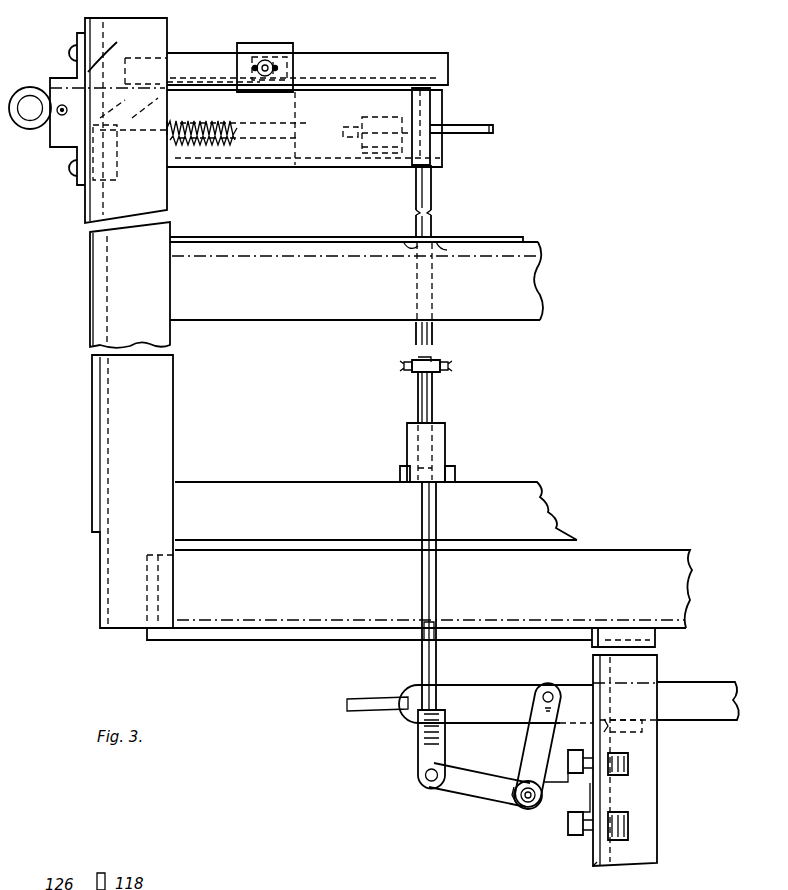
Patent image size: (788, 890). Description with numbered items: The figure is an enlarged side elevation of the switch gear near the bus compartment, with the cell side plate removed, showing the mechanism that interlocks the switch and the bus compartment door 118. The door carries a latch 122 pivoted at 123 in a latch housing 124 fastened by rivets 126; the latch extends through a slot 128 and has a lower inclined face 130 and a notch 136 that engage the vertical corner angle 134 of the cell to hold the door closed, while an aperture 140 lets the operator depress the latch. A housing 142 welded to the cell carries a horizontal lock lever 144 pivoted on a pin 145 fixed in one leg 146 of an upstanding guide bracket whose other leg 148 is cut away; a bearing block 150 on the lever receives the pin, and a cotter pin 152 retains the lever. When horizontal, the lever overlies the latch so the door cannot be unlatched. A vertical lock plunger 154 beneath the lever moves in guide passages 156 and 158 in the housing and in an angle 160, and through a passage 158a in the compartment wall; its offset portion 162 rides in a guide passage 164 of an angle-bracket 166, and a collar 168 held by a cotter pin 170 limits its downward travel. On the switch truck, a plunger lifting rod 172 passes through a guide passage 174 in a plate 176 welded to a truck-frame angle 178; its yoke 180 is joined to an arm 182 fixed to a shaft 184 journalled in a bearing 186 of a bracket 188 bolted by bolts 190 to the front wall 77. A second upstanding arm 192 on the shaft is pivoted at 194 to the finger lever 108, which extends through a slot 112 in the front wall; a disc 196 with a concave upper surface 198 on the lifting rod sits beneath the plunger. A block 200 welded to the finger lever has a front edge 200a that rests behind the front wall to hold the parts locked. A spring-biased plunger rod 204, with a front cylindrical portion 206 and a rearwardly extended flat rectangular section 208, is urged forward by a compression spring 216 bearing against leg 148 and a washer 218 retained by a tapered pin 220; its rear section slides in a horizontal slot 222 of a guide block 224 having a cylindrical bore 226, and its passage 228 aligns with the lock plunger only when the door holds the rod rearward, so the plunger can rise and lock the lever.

The front wall 77 is at (596, 862).
The finger lever 108 is at (470, 691).
The slot 112 is at (593, 673).
The door 118 is at (85, 213).
The latch 122 is at (113, 87).
The latch pivot 123 is at (63, 141).
The latch housing 124 is at (70, 168).
The rivets 126 is at (70, 53).
The slot 128 is at (104, 48).
The lower inclined face 130 is at (158, 96).
The vertical corner angle 134 is at (166, 199).
The notch 136 is at (100, 109).
The aperture 140 is at (28, 121).
The housing 142 is at (330, 152).
The lock lever 144 is at (345, 63).
The pin 145 is at (266, 60).
The leg of guide bracket 146 is at (294, 46).
The leg of guide bracket 148 is at (236, 122).
The bearing block 150 is at (255, 68).
The cotter pin 152 is at (276, 69).
The lock plunger 154 is at (433, 193).
The guide passage 156 is at (447, 160).
The guide passage 158 is at (434, 251).
The passage 158a is at (415, 241).
The angle 160 is at (535, 267).
The offset portion 162 is at (433, 412).
The guide passage 164 is at (415, 430).
The angle-bracket 166 is at (447, 453).
The collar 168 is at (437, 363).
The cotter pin 170 is at (404, 366).
The plunger lifting rod 172 is at (430, 530).
The guide passage 174 is at (437, 633).
The plate 176 is at (358, 639).
The angle 178 is at (620, 552).
The yoke 180 is at (420, 748).
The arm 182 is at (472, 784).
The shaft 184 is at (527, 811).
The bearing 186 is at (521, 804).
The bracket 188 is at (563, 798).
The bolts 190 is at (574, 752).
The second upstanding arm 192 is at (537, 742).
The pivot 194 is at (546, 692).
The disc 196 is at (457, 473).
The concave upper surface 198 is at (405, 468).
The block 200 is at (640, 733).
The front edge 200a is at (596, 720).
The plunger rod 204 is at (348, 122).
The front cylindrical portion 206 is at (144, 143).
The rearwardly extended flat rectangular section 208 is at (494, 128).
The compression spring 216 is at (205, 147).
The washer 218 is at (176, 123).
The tapered pin 220 is at (168, 132).
The horizontal slot 222 is at (393, 121).
The guide block 224 is at (385, 117).
The cylindrical bore 226 is at (390, 143).
The passage 228 is at (436, 128).